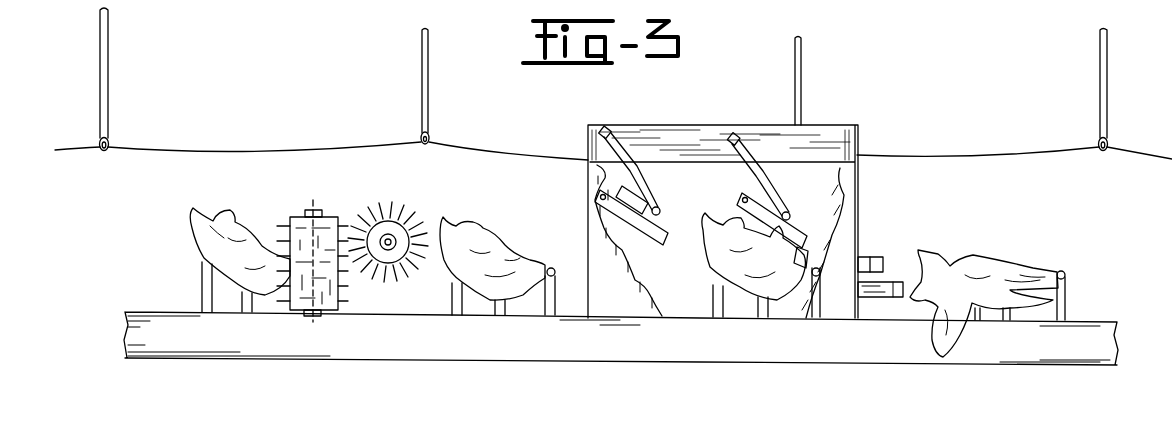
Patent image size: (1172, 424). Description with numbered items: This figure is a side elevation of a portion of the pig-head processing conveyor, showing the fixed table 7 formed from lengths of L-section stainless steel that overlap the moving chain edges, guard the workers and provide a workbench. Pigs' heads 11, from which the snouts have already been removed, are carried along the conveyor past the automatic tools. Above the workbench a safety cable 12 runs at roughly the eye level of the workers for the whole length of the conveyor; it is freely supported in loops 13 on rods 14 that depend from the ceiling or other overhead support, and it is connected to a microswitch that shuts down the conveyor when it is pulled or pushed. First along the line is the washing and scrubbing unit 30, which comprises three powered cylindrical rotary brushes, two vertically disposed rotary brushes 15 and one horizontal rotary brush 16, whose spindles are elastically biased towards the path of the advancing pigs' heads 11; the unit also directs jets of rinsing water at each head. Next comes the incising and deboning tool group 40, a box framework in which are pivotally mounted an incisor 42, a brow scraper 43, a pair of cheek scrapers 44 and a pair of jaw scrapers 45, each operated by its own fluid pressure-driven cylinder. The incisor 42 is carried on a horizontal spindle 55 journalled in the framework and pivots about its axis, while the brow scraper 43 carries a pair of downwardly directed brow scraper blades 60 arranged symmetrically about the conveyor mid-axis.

The table 7 is at (160, 312).
The pigs' heads 11 is at (515, 258).
The safety cable 12 is at (244, 150).
The loops 13 is at (1108, 140).
The rods 14 is at (1107, 68).
The vertically disposed rotary brushes 15 is at (296, 218).
The horizontal rotary brush 16 is at (333, 187).
The washing and scrubbing unit 30 is at (343, 243).
The incising and deboning tool group 40 is at (718, 196).
The incisor 42 is at (660, 212).
The brow scraper 43 is at (798, 233).
The cheek scrapers 44 is at (865, 256).
The jaw scrapers 45 is at (885, 298).
The horizontal spindle 55 is at (590, 196).
The brow scraper blades 60 is at (812, 252).